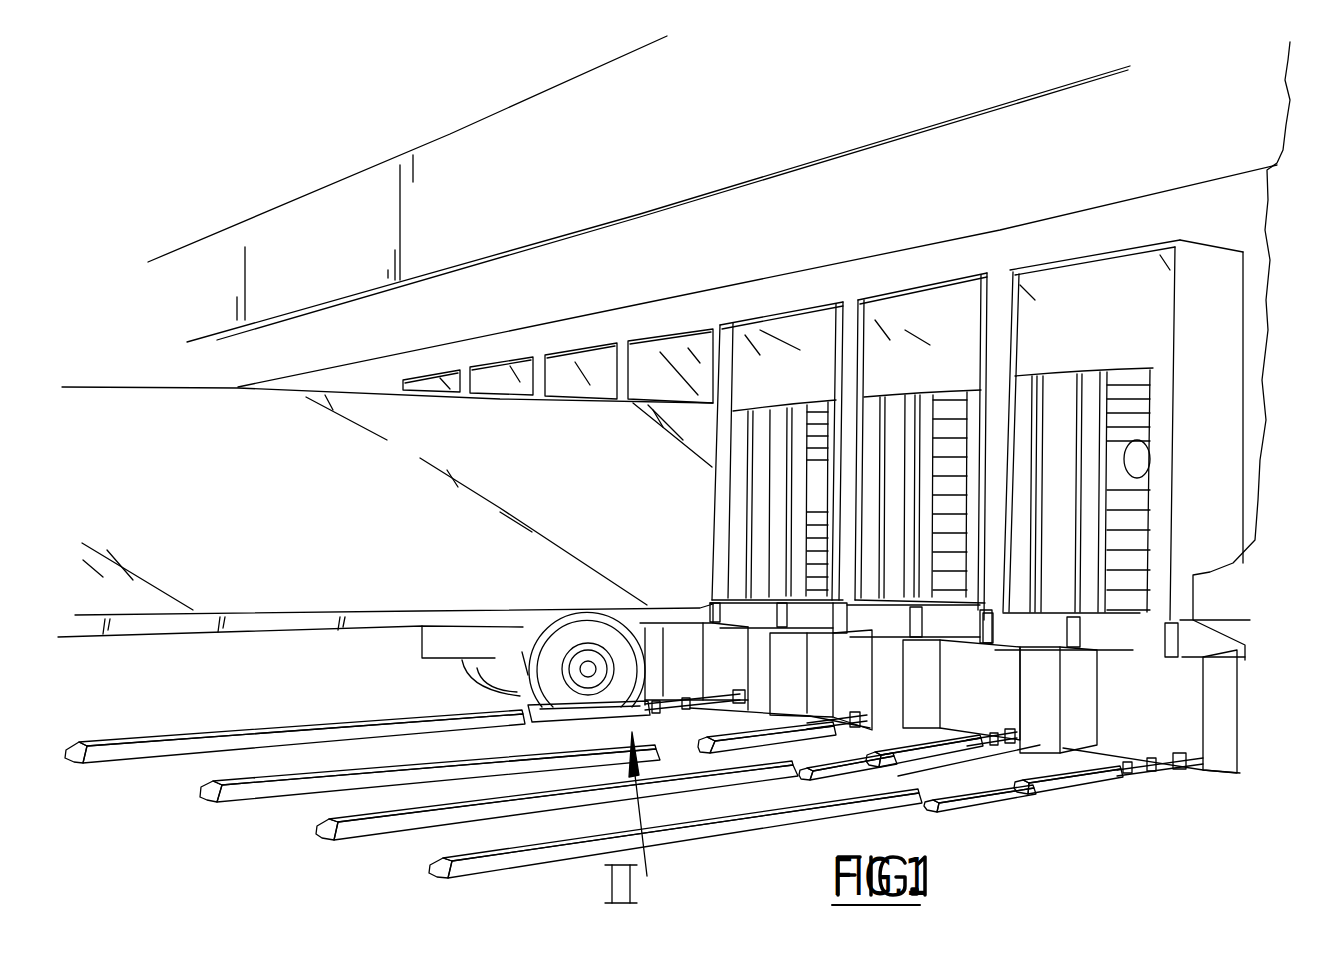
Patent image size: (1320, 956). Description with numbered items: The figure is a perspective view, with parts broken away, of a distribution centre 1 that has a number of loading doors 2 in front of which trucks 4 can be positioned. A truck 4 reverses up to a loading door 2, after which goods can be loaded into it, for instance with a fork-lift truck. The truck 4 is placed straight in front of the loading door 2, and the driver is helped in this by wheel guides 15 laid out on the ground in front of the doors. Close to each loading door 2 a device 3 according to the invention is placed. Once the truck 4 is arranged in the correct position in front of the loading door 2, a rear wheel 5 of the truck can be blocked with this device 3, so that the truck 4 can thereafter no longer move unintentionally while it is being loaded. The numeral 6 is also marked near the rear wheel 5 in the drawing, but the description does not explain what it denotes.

The distribution centre 1 is at (500, 160).
The loading door 2 is at (922, 385).
The device 3 is at (548, 735).
The truck 4 is at (315, 546).
The rear wheel 5 is at (527, 668).
The wheel hub 6 is at (520, 668).
The wheel guide 15 is at (333, 817).